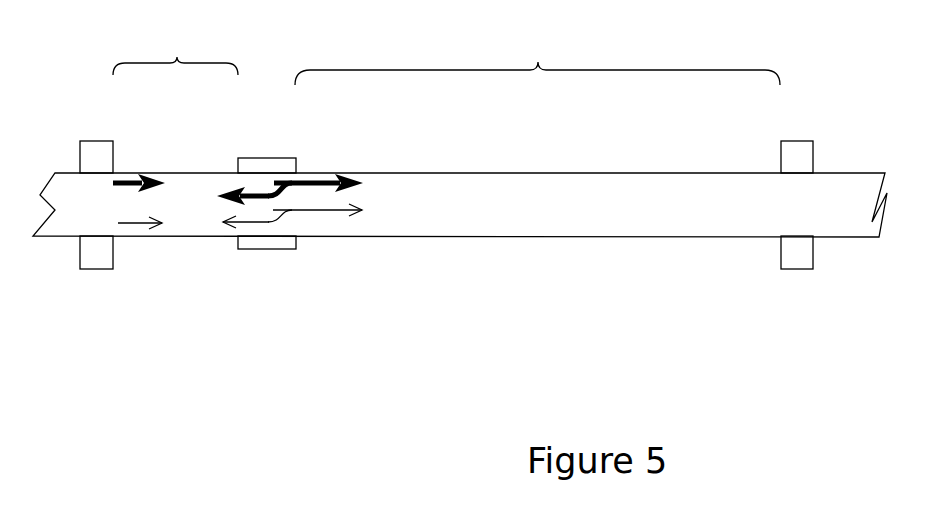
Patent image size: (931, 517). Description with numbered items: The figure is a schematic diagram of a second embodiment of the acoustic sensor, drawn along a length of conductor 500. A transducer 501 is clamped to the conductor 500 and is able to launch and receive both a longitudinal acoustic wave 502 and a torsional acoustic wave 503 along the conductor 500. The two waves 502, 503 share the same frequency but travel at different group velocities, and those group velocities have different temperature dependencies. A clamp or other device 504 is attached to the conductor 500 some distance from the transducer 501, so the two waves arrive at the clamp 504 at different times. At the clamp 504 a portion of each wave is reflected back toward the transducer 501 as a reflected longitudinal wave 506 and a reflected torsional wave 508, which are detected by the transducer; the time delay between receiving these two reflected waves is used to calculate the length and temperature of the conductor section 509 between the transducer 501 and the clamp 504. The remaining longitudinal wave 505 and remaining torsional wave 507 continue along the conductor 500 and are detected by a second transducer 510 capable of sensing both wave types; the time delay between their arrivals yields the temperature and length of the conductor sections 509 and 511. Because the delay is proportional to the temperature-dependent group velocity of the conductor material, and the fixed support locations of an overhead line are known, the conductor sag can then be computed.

The conductor 500 is at (62, 222).
The transducer 501 is at (93, 257).
The longitudinal acoustic wave 502 is at (132, 177).
The torsional acoustic wave 503 is at (132, 222).
The clamp 504 is at (283, 165).
The remaining longitudinal wave 505 is at (313, 178).
The reflected longitudinal wave 506 is at (253, 193).
The remaining torsional wave 507 is at (323, 210).
The reflected torsional wave 508 is at (257, 223).
The conductor section 509 is at (175, 53).
The second transducer 510 is at (802, 245).
The conductor section 511 is at (537, 58).